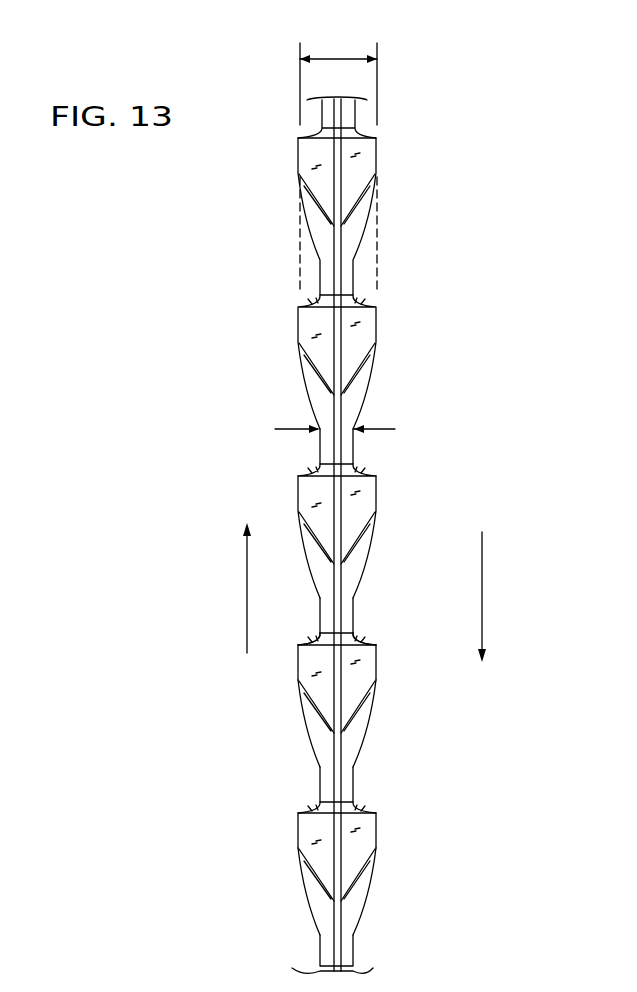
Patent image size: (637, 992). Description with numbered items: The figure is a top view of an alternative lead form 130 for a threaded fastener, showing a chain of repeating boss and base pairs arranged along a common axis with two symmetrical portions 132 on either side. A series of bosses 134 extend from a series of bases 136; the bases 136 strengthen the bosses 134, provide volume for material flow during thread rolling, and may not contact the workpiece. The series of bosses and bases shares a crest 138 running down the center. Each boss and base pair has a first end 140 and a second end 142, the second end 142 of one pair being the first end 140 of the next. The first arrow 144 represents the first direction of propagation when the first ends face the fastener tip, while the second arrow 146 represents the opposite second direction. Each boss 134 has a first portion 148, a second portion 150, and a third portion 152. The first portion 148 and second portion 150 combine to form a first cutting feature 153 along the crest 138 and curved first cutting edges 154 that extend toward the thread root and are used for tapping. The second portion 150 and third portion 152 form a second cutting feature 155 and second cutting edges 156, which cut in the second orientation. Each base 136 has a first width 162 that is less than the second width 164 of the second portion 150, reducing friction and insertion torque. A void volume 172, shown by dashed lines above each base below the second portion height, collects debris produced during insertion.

The lead form 130 is at (369, 490).
The symmetrical portions 132 is at (282, 165).
The bosses 134 is at (352, 343).
The bases 136 is at (345, 445).
The crest 138 is at (338, 268).
The first end 140 is at (355, 608).
The second end 142 is at (350, 477).
The first arrow 144 is at (488, 588).
The second arrow 146 is at (247, 592).
The first portion 148 is at (320, 727).
The second portion 150 is at (300, 660).
The third portion 152 is at (317, 640).
The first cutting feature 153 is at (340, 742).
The first cutting edges 154 is at (355, 698).
The second cutting feature 155 is at (333, 317).
The second cutting edges 156 is at (315, 302).
The first width 162 is at (297, 427).
The second width 164 is at (342, 57).
The void volume 172 is at (310, 238).